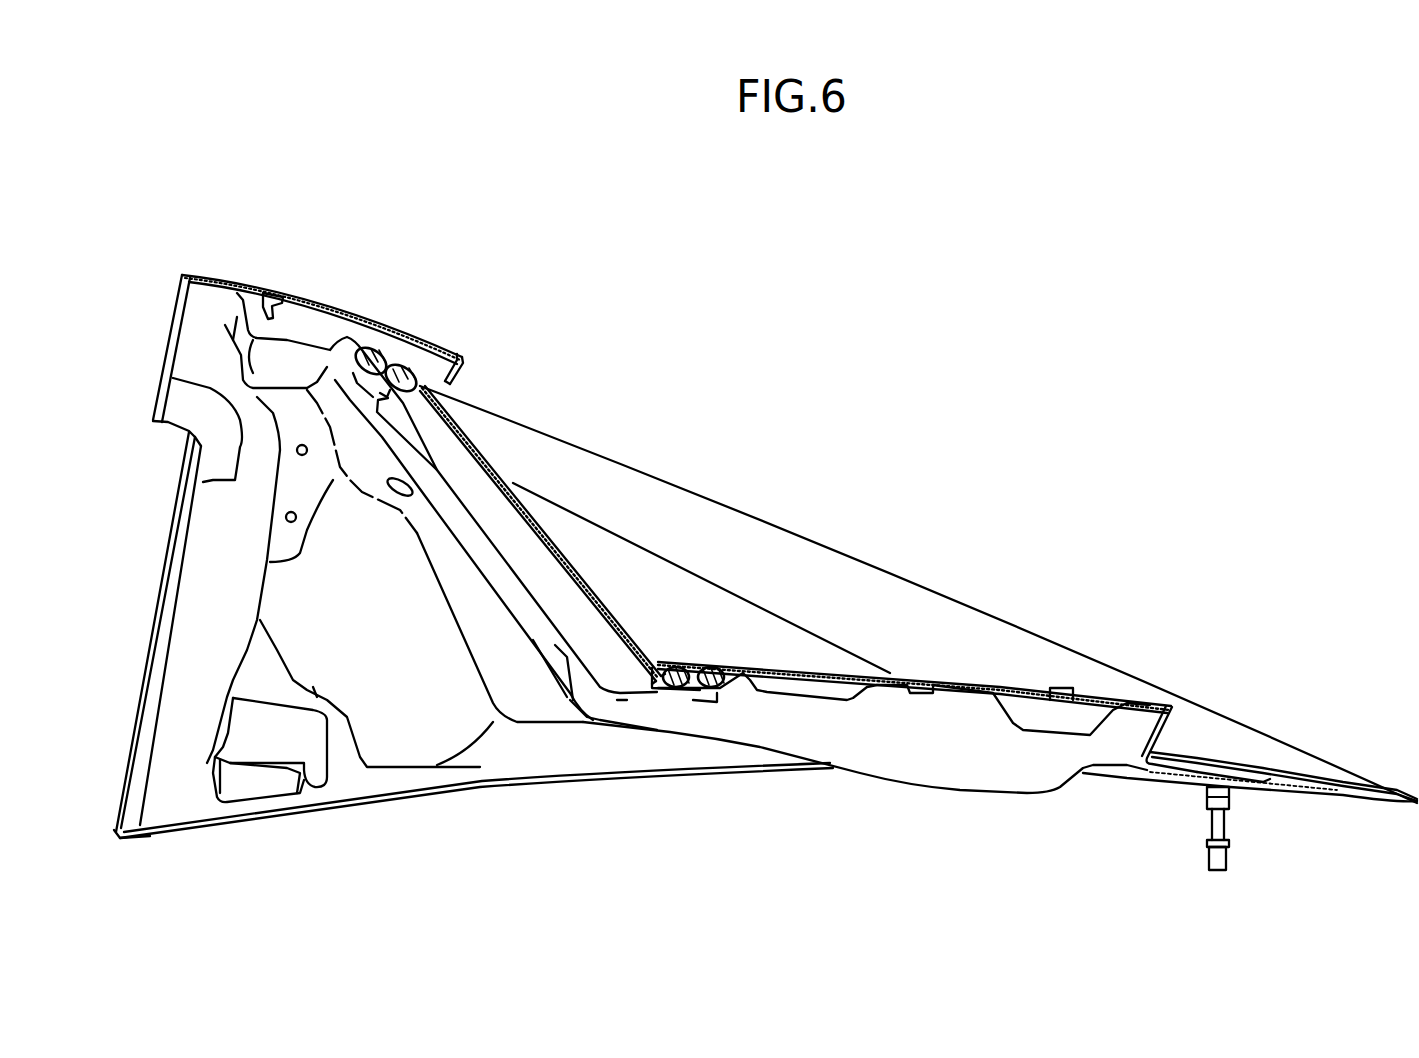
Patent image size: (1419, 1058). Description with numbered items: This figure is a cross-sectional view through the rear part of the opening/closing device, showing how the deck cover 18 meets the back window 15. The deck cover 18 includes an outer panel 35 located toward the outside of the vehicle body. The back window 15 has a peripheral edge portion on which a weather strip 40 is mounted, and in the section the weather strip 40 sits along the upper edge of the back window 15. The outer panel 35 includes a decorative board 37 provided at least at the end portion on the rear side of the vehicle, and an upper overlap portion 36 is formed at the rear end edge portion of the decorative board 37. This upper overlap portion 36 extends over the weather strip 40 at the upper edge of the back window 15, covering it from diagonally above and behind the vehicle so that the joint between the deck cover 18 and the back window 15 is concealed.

The back window 15 is at (580, 562).
The deck cover 18 is at (893, 503).
The outer panel 35 is at (236, 277).
The upper overlap portion 36 is at (467, 373).
The decorative board 37 is at (367, 310).
The weather strip 40 is at (440, 355).